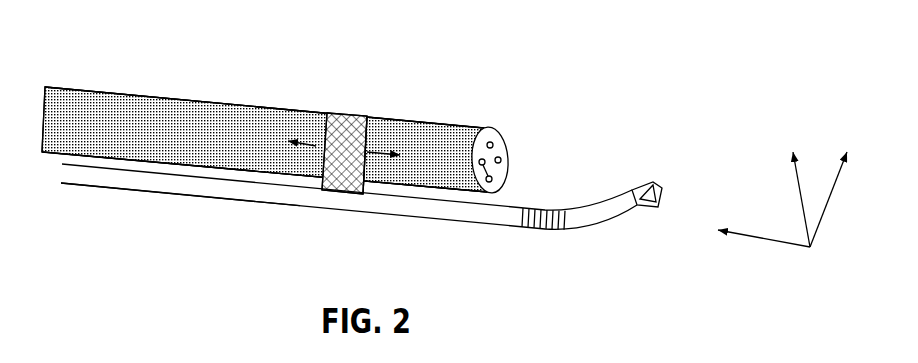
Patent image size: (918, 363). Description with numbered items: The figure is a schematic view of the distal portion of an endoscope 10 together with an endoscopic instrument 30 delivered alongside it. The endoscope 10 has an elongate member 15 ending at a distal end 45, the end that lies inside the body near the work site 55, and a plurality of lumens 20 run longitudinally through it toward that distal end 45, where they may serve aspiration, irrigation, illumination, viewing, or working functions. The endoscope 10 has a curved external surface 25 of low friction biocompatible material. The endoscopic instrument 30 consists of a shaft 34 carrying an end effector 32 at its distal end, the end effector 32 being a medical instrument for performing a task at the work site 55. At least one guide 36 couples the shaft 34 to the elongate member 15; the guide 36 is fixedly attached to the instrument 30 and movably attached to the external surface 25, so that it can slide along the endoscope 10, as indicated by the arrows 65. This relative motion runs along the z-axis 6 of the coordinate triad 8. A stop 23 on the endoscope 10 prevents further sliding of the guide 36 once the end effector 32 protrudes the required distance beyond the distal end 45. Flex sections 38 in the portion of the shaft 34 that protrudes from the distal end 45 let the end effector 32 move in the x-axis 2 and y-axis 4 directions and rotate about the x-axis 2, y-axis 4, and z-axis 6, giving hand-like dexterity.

The endoscope 10 is at (140, 82).
The elongate member 15 is at (208, 113).
The external surface 25 is at (83, 115).
The guide 36 is at (357, 113).
The stop 23 is at (372, 116).
The arrows 65 is at (316, 145).
The lumens 20 is at (498, 157).
The endoscopic instrument 30 is at (606, 216).
The shaft 34 is at (158, 191).
The flex sections 38 is at (540, 232).
The end effector 32 is at (650, 208).
The distal end 45 is at (553, 83).
The work site 55 is at (655, 163).
The y-axis 4 is at (800, 192).
The x-axis 2 is at (825, 212).
The z-axis 6 is at (762, 240).
The triad 8 is at (809, 282).